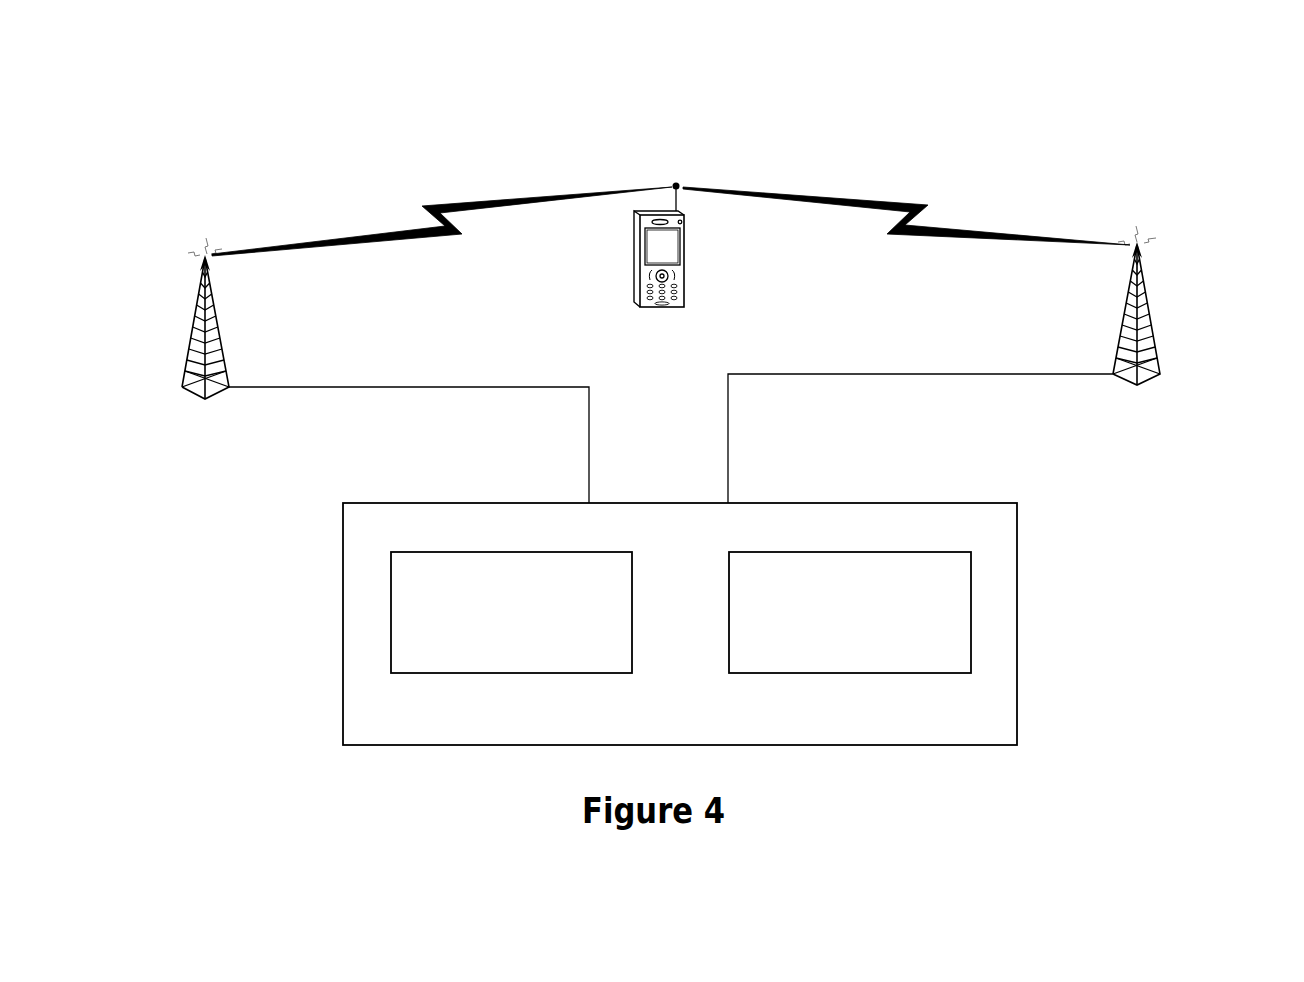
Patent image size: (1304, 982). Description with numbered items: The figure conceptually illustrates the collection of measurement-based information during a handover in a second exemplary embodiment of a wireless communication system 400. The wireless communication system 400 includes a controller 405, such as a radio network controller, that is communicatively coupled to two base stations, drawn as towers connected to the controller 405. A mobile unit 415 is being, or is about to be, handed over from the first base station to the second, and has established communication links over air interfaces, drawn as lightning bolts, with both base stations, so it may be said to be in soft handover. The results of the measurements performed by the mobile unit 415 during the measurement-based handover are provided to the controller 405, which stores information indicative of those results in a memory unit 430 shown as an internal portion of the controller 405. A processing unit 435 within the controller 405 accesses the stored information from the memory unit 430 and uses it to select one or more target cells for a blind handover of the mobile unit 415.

The wireless communication system 400 is at (1011, 110).
The controller 405 is at (930, 721).
The mobile unit 415 is at (677, 308).
The memory unit 430 is at (860, 643).
The processing unit 435 is at (519, 642).